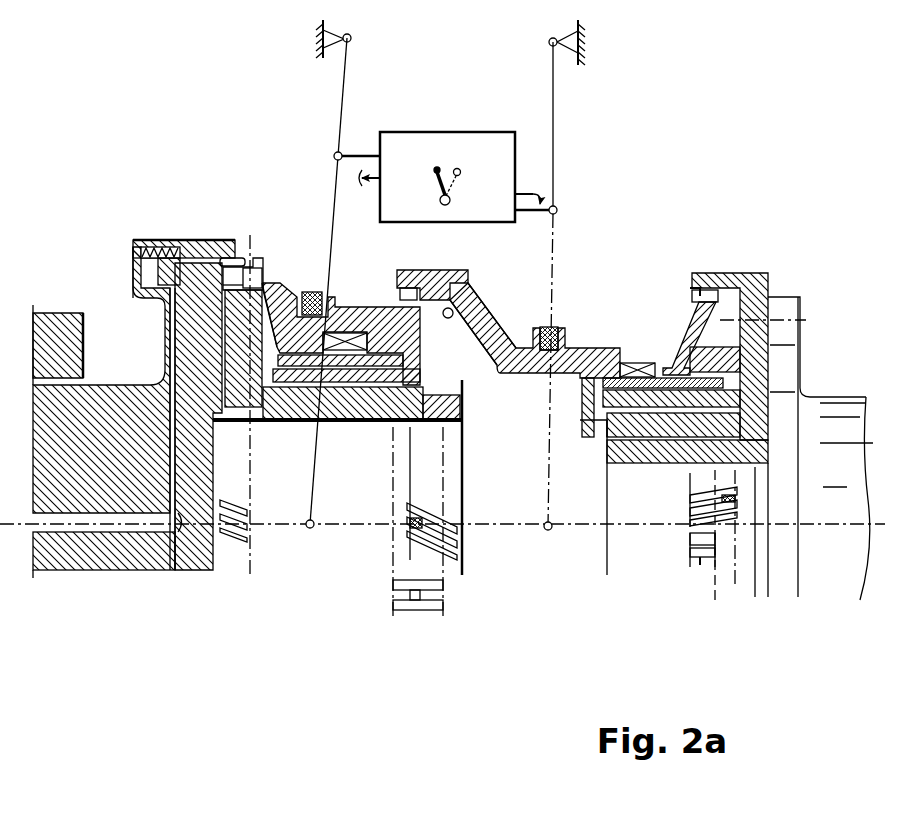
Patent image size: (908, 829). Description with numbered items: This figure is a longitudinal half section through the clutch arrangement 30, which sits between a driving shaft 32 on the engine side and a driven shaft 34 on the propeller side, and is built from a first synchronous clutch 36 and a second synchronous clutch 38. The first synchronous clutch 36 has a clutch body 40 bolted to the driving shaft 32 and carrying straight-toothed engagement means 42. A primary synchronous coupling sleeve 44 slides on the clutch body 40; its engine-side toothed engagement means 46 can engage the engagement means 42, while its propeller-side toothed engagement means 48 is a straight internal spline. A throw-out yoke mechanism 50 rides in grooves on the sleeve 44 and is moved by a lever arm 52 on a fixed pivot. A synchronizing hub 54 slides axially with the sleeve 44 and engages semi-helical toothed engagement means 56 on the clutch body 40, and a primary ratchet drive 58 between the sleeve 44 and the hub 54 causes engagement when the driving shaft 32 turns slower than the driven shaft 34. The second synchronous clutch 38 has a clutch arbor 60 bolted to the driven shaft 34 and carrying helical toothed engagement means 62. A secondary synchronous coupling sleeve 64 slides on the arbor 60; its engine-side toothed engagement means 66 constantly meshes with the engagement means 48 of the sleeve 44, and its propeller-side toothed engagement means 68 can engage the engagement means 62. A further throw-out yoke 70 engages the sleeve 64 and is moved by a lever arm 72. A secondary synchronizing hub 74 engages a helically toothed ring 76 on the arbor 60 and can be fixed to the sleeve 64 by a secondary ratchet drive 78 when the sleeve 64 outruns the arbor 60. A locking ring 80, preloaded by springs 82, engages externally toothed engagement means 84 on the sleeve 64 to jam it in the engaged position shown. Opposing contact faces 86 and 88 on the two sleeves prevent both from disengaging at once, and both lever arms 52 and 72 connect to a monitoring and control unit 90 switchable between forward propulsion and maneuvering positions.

The clutch arrangement 30 is at (373, 663).
The driving shaft 32 is at (835, 400).
The driven shaft 34 is at (110, 417).
The first synchronous clutch 36 is at (599, 246).
The second synchronous clutch 38 is at (290, 180).
The first clutch drive member or body 40 is at (752, 290).
The toothed engagement means 42 is at (692, 293).
The primary synchronous coupling sleeve 44 is at (584, 350).
The engine-side toothed engagement means 46 is at (695, 290).
The propeller-side toothed engagement means 48 is at (437, 292).
The actuating fork or throw-out yoke mechanism 50 is at (553, 326).
The lever arm 52 is at (556, 104).
The synchronizing hub 54 is at (588, 393).
The semi-helical toothed engagement means 56 is at (682, 370).
The primary ratchet drive 58 is at (622, 360).
The clutch member or arbor 60 is at (240, 330).
The toothed engagement means 62 is at (248, 292).
The secondary synchronous coupling sleeve 64 is at (357, 327).
The engine-side toothed engagement means 66 is at (407, 288).
The propeller-side toothed engagement means 68 is at (247, 273).
The actuating fork or throw-out yoke 70 is at (312, 290).
The lever arm 72 is at (343, 88).
The secondary synchronizing hub 74 is at (282, 421).
The helically toothed ring 76 is at (462, 395).
The secondary ratchet drive 78 is at (315, 345).
The locking or engagement ring 80 is at (200, 240).
The springs 82 is at (134, 270).
The externally toothed engagement means 84 is at (238, 256).
The contact or pressure face 86 is at (478, 316).
The contact or pressure face 88 is at (448, 320).
The monitoring and control unit 90 is at (442, 118).